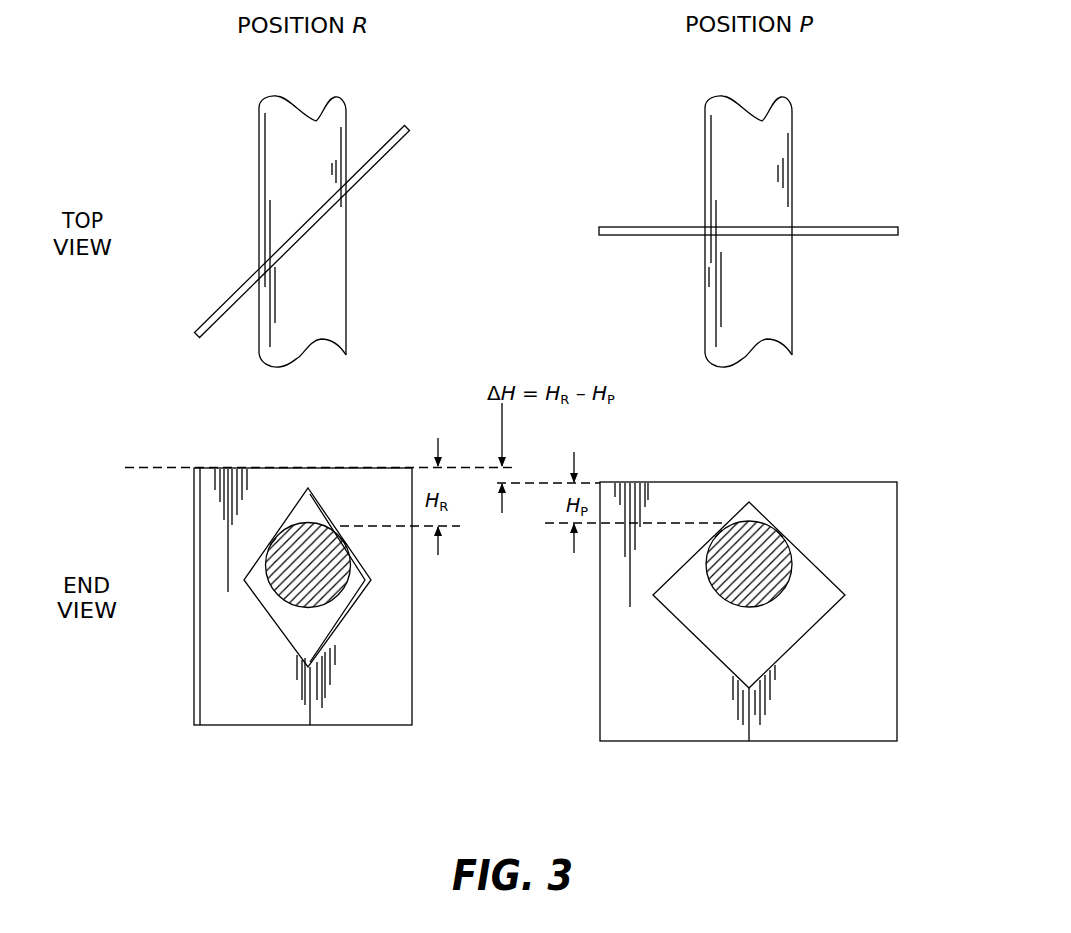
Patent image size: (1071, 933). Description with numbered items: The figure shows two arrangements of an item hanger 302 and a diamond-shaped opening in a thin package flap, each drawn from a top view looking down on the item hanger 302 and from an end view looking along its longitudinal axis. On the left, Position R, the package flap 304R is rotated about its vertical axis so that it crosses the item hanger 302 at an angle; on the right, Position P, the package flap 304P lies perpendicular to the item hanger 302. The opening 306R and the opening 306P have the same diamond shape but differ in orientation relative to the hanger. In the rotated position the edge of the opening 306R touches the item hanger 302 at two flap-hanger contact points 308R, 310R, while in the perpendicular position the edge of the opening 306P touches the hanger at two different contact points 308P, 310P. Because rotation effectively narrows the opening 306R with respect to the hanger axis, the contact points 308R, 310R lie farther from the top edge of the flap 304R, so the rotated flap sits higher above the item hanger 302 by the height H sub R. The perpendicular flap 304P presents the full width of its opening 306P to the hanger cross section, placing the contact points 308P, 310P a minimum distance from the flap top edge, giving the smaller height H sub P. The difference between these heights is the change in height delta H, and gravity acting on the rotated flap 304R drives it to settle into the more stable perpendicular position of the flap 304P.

The item hanger 302 is at (346, 113).
The package flap 304R is at (372, 172).
The package flap 304P is at (828, 237).
The opening 306R is at (291, 645).
The opening 306P is at (784, 656).
The flap-hanger contact point 308R is at (273, 541).
The flap-hanger contact point 310R is at (344, 541).
The flap-hanger contact point 308P is at (718, 534).
The flap-hanger contact point 310P is at (780, 534).